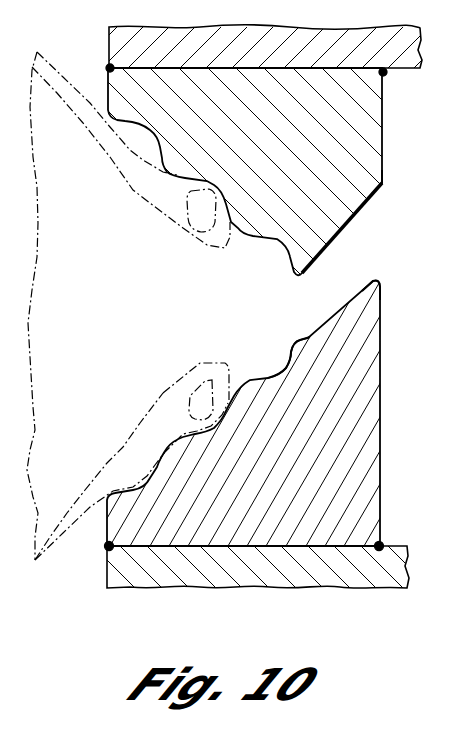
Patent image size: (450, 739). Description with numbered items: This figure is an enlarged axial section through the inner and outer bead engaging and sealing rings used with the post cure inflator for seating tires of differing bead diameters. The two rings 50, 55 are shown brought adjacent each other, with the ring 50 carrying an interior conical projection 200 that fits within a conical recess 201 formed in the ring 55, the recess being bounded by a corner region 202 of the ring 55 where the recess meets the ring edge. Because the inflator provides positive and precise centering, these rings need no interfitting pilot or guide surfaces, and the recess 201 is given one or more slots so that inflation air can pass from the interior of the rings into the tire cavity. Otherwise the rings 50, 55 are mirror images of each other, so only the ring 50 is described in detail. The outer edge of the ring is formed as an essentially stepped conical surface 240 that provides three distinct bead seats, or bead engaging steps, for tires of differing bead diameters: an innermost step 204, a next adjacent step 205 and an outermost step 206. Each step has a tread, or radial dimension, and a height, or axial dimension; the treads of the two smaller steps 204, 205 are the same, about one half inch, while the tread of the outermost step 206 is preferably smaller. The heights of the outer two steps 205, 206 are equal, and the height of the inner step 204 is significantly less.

The ring 50 is at (383, 395).
The ring 55 is at (383, 128).
The interior conical projection 200 is at (366, 281).
The conical recess 201 is at (362, 215).
The corner of upper die 202 is at (377, 192).
The innermost bead engaging step 204 is at (270, 364).
The next adjacent bead engaging step 205 is at (185, 424).
The outermost bead engaging step 206 is at (135, 479).
The stepped conical surface 240 is at (193, 362).